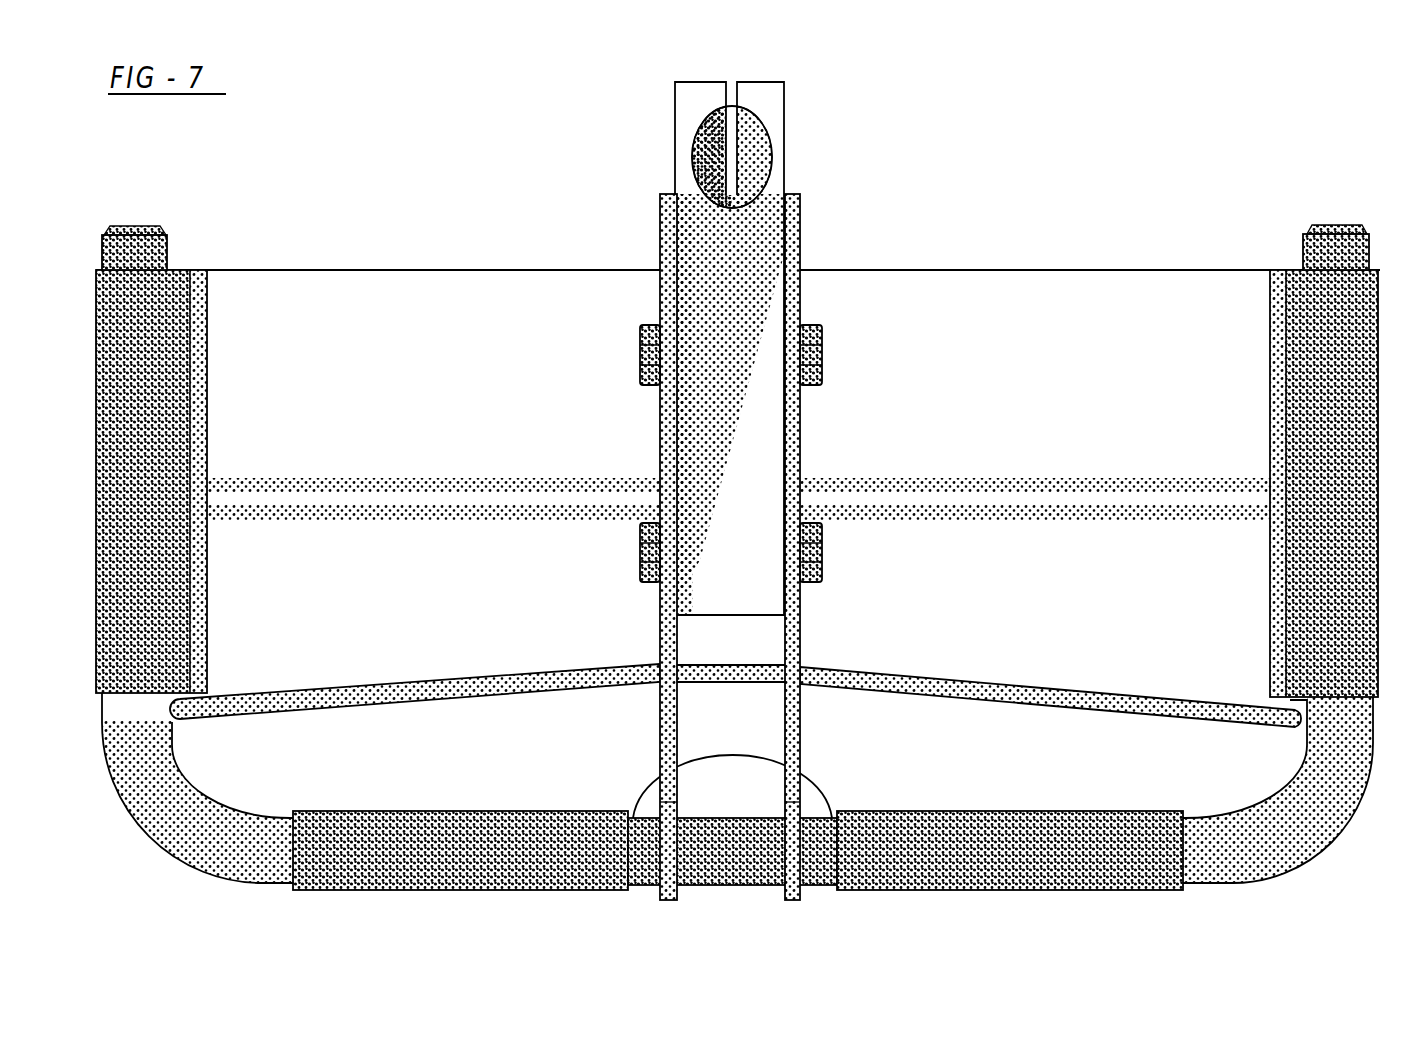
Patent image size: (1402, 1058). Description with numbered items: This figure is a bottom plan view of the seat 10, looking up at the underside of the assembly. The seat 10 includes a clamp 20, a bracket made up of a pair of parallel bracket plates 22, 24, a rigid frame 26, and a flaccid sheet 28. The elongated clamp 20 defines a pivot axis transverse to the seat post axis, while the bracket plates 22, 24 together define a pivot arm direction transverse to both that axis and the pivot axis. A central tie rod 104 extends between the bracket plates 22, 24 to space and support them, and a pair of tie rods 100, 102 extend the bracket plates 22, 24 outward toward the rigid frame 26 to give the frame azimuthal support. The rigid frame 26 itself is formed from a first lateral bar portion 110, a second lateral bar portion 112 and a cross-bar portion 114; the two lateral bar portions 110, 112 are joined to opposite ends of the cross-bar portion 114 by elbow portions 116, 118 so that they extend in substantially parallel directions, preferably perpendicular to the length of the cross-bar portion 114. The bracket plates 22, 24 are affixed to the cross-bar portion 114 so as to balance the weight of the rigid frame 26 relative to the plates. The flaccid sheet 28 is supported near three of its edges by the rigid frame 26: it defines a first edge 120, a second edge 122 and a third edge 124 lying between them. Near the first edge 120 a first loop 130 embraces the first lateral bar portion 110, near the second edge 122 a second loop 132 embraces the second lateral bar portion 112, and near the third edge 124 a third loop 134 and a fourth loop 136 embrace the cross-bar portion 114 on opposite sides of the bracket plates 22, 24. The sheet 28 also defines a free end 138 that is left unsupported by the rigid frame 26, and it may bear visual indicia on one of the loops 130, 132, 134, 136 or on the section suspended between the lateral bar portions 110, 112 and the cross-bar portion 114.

The seat 10 is at (927, 246).
The clamp 20 is at (772, 255).
The bracket plate 22 is at (662, 455).
The bracket plate 24 is at (787, 432).
The rigid frame 26 is at (722, 836).
The flaccid sheet 28 is at (1045, 290).
The tie rod 100 is at (423, 700).
The tie rod 102 is at (1020, 700).
The central tie rod 104 is at (718, 673).
The first lateral bar portion 110 is at (152, 256).
The second lateral bar portion 112 is at (1317, 258).
The cross-bar portion 114 is at (810, 835).
The elbow portion 116 is at (190, 820).
The elbow portion 118 is at (1290, 825).
The first edge 120 is at (207, 562).
The second edge 122 is at (1270, 467).
The third edge 124 is at (1093, 812).
The first loop 130 is at (160, 466).
The second loop 132 is at (1305, 379).
The third loop 134 is at (500, 813).
The fourth loop 136 is at (980, 832).
The free end 138 is at (432, 272).